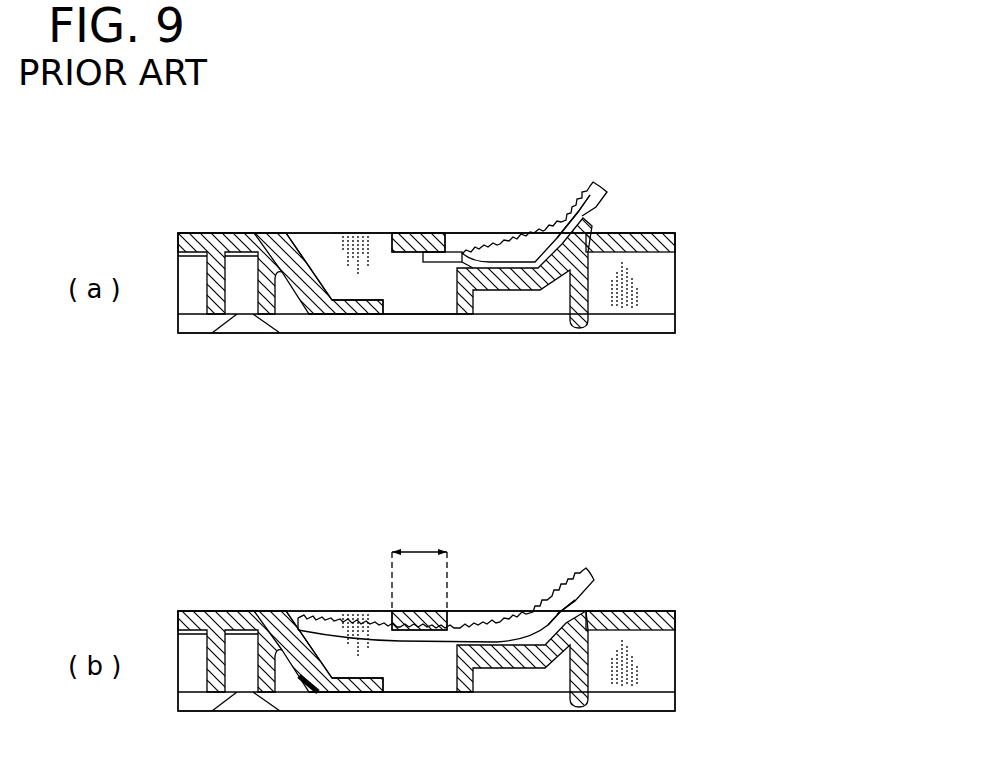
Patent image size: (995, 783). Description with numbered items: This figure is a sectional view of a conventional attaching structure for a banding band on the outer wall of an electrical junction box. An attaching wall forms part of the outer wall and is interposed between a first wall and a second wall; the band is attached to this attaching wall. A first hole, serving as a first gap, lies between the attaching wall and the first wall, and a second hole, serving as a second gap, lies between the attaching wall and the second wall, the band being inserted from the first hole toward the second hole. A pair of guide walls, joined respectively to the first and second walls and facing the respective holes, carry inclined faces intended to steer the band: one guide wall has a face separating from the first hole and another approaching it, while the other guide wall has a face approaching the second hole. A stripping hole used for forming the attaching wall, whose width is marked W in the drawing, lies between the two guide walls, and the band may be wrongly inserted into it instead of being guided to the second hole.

The width W is at (420, 549).